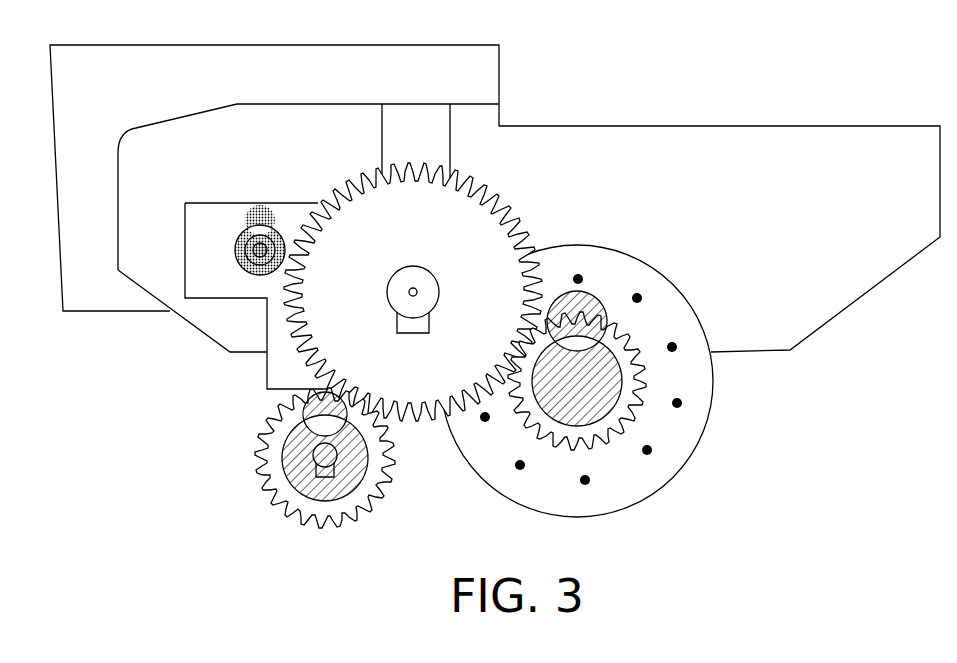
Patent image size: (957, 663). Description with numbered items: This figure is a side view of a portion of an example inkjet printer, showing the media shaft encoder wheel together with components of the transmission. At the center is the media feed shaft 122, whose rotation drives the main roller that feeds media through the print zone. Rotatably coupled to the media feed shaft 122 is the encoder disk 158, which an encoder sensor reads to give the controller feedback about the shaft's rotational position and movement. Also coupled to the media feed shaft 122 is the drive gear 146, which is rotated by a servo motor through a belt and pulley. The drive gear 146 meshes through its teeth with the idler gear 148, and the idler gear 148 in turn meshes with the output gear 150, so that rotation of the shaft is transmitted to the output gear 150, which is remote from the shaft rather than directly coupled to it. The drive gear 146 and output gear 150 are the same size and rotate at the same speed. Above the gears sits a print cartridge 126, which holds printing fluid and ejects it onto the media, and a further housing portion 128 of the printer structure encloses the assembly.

The media feed shaft 122 is at (588, 362).
The print cartridge 126 is at (218, 55).
The housing portion 128 is at (657, 133).
The drive gear 146 is at (637, 400).
The idler gear 148 is at (302, 347).
The output gear 150 is at (262, 490).
The encoder disk 158 is at (640, 490).